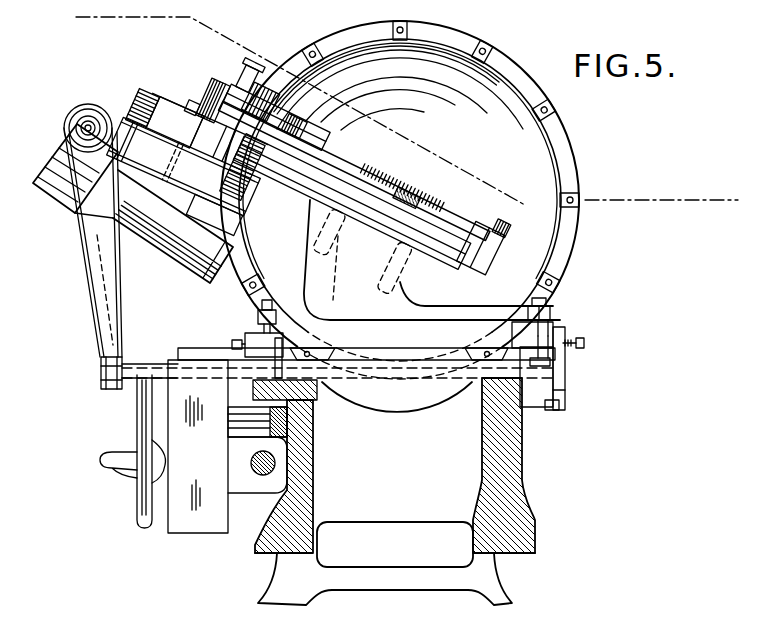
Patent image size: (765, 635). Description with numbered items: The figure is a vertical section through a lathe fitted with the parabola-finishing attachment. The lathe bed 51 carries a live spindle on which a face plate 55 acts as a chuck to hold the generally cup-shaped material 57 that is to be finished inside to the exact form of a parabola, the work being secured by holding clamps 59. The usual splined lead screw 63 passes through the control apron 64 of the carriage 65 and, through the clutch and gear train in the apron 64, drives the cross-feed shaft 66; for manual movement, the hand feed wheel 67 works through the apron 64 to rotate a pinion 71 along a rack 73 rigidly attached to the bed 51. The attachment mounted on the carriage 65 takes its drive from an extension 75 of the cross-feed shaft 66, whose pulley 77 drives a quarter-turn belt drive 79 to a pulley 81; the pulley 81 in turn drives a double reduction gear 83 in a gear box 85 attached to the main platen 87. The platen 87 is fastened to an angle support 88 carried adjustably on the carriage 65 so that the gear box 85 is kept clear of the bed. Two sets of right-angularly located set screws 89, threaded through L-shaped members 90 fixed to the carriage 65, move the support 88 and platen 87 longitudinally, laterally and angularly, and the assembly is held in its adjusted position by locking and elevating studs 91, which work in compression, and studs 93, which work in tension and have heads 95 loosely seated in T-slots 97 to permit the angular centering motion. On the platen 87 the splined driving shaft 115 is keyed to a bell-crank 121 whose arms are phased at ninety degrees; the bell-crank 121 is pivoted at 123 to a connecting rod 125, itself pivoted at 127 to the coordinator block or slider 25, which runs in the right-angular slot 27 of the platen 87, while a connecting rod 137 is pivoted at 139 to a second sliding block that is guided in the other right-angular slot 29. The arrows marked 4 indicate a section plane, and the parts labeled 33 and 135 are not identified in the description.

The section line 4- 4 is at (70, 8).
The coordinator block 25 is at (177, 145).
The right-angular slot 27 is at (192, 112).
The right-angular slot 29 is at (318, 232).
The guide bar 33 is at (358, 198).
The lathe bed 51 is at (312, 528).
The face plate 55 is at (510, 63).
The material 57 is at (543, 155).
The holding clamps 59 is at (478, 46).
The lead screw 63 is at (265, 475).
The control apron 64 is at (172, 394).
The carriage 65 is at (425, 392).
The cross-feed shaft 66 is at (178, 352).
The hand feed wheel 67 is at (136, 476).
The pinion 71 is at (300, 425).
The rack 73 is at (310, 400).
The extension 75 is at (100, 372).
The pulley 77 is at (101, 387).
The quarter-turn belt drive 79 is at (88, 282).
The pulley 81 is at (75, 126).
The double reduction gear 83 is at (50, 155).
The gear box 85 is at (143, 238).
The main platen 87 is at (265, 185).
The angle support 88 is at (306, 278).
The set screws 89 is at (234, 341).
The L-shaped members 90 is at (248, 352).
The locking and elevating studs 91 is at (272, 305).
The locking and elevating studs 93 is at (283, 322).
The heads 95 is at (545, 366).
The T-slots 97 is at (305, 350).
The driving shaft 115 is at (215, 95).
The bell-crank 121 is at (228, 176).
The pivot 123 is at (230, 85).
The connecting rod 125 is at (248, 88).
The pivot 127 is at (267, 77).
The clamp knob 135 is at (305, 124).
The connecting rod 137 is at (376, 176).
The pivot 139 is at (492, 228).